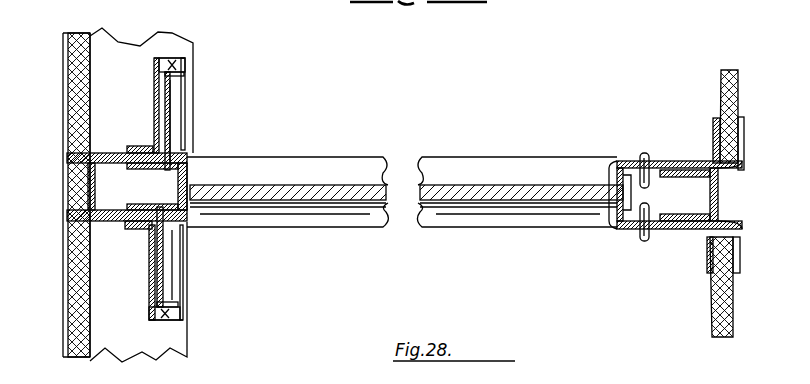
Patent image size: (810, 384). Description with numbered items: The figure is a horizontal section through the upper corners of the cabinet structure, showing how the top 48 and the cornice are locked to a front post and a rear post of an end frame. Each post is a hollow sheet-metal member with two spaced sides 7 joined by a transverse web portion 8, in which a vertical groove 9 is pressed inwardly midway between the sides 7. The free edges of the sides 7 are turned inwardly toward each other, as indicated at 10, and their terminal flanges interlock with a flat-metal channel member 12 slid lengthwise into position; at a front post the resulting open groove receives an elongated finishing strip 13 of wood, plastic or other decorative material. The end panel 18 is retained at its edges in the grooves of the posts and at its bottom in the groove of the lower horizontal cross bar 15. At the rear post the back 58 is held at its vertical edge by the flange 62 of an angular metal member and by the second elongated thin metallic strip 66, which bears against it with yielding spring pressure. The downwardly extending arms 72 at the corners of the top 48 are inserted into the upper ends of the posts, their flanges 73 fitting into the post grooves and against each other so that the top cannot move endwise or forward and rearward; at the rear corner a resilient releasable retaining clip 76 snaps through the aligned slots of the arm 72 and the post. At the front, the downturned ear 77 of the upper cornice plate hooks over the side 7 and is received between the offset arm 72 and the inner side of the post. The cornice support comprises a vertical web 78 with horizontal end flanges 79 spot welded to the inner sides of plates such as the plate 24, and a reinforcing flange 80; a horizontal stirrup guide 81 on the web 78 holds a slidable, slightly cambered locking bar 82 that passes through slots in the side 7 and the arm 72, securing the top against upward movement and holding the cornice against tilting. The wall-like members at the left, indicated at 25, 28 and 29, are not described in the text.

The side 7 is at (110, 152).
The transverse web portion 8 is at (200, 219).
The vertical groove 9 is at (617, 187).
The inwardly turned free edge 10 is at (66, 160).
The channel member 12 is at (83, 187).
The finishing strip 13 is at (67, 182).
The horizontal cross bar 15 is at (352, 168).
The end panel 18 is at (445, 187).
The plate 24 is at (120, 50).
The wall 25 is at (64, 68).
The wall 28 is at (104, 40).
The wall facing 29 is at (80, 50).
The top 48 is at (223, 375).
The back 58 is at (727, 73).
The flange 62 is at (742, 127).
The elongated thin metallic strip 66 is at (715, 130).
The arm 72 is at (140, 210).
The flange 73 is at (94, 188).
The releasable retaining clip 76 is at (645, 157).
The downturned ear 77 is at (121, 147).
The vertical web 78 is at (154, 64).
The horizontal end flange 79 is at (177, 130).
The flange 80 is at (137, 146).
The horizontal stirrup guide 81 is at (171, 106).
The locking bar 82 is at (170, 97).